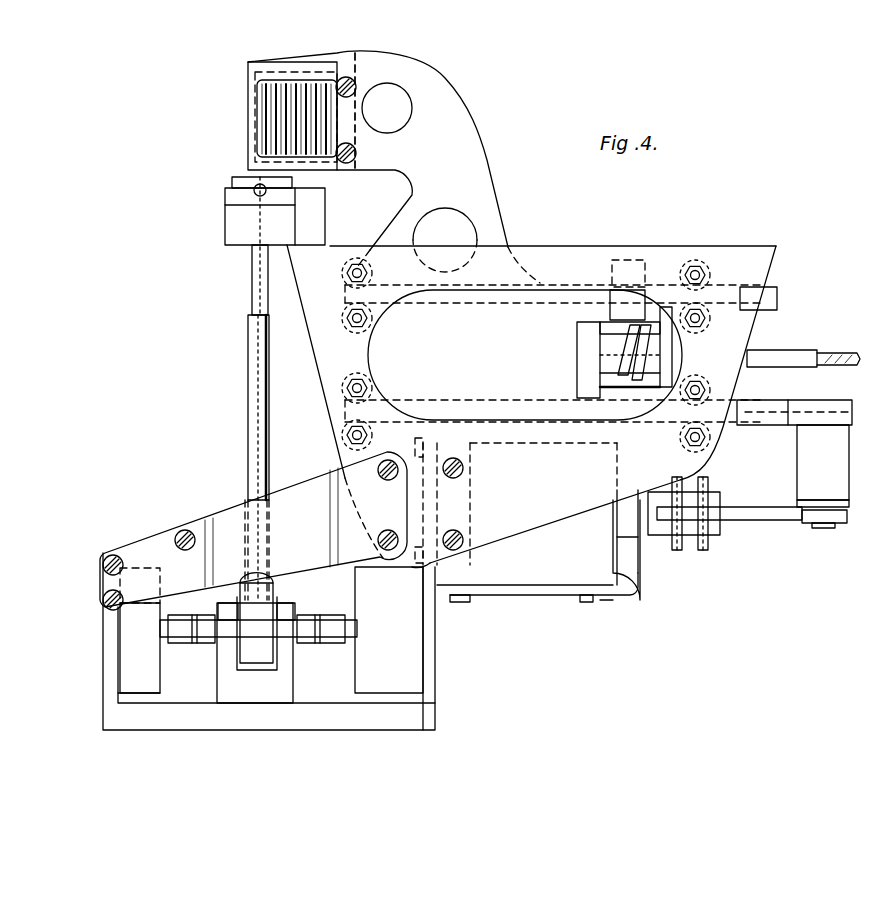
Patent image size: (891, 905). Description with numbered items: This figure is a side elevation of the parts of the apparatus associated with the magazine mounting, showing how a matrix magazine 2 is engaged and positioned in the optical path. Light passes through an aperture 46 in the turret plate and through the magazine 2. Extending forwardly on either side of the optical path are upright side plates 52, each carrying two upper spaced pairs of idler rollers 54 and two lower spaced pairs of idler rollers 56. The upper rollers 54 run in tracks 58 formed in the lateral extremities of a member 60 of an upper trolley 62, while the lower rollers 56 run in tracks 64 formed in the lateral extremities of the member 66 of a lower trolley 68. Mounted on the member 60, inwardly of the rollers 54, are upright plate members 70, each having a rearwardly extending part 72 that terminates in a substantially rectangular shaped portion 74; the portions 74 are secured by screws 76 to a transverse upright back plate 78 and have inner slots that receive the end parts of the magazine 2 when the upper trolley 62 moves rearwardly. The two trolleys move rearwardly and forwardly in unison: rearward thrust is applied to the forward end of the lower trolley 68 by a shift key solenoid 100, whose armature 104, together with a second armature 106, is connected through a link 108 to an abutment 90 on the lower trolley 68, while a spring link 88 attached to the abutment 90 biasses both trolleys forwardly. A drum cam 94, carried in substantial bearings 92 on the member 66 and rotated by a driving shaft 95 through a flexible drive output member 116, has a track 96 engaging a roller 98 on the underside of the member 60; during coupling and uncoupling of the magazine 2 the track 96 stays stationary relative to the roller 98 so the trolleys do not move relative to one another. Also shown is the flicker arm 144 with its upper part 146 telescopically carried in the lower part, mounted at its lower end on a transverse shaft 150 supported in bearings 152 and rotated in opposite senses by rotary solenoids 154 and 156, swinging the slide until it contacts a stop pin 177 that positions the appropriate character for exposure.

The magazine 2 is at (268, 62).
The aperture 46 is at (255, 223).
The side plate 52 is at (323, 322).
The upper idler rollers 54 is at (350, 313).
The lower idler rollers 56 is at (350, 432).
The tracks 58 is at (772, 278).
The member 60 is at (778, 298).
The upper trolley 62 is at (777, 306).
The tracks 64 is at (752, 404).
The member 66 is at (765, 428).
The lower trolley 68 is at (741, 414).
The plate member 70 is at (458, 165).
The rearwardly extending part 72 is at (430, 82).
The rectangular shaped portion 74 is at (248, 118).
The screws 76 is at (345, 77).
The back plate 78 is at (368, 62).
The spring link 88 is at (805, 515).
The abutment 90 is at (823, 462).
The bearings 92 is at (578, 390).
The drum cam 94 is at (605, 330).
The driving shaft 95 is at (786, 350).
The track 96 is at (630, 372).
The roller 98 is at (634, 335).
The shift key solenoid 100 is at (526, 520).
The armature 104 is at (660, 545).
The armature 106 is at (722, 535).
The link 108 is at (792, 511).
The flexible drive output member 116 is at (852, 352).
The flicker arm 144 is at (250, 346).
The upper part 146 is at (252, 271).
The transverse shaft 150 is at (213, 620).
The bearings 152 is at (292, 605).
The rotary solenoid 154 is at (140, 630).
The rotary solenoid 156 is at (269, 641).
The stop pin 177 is at (254, 192).